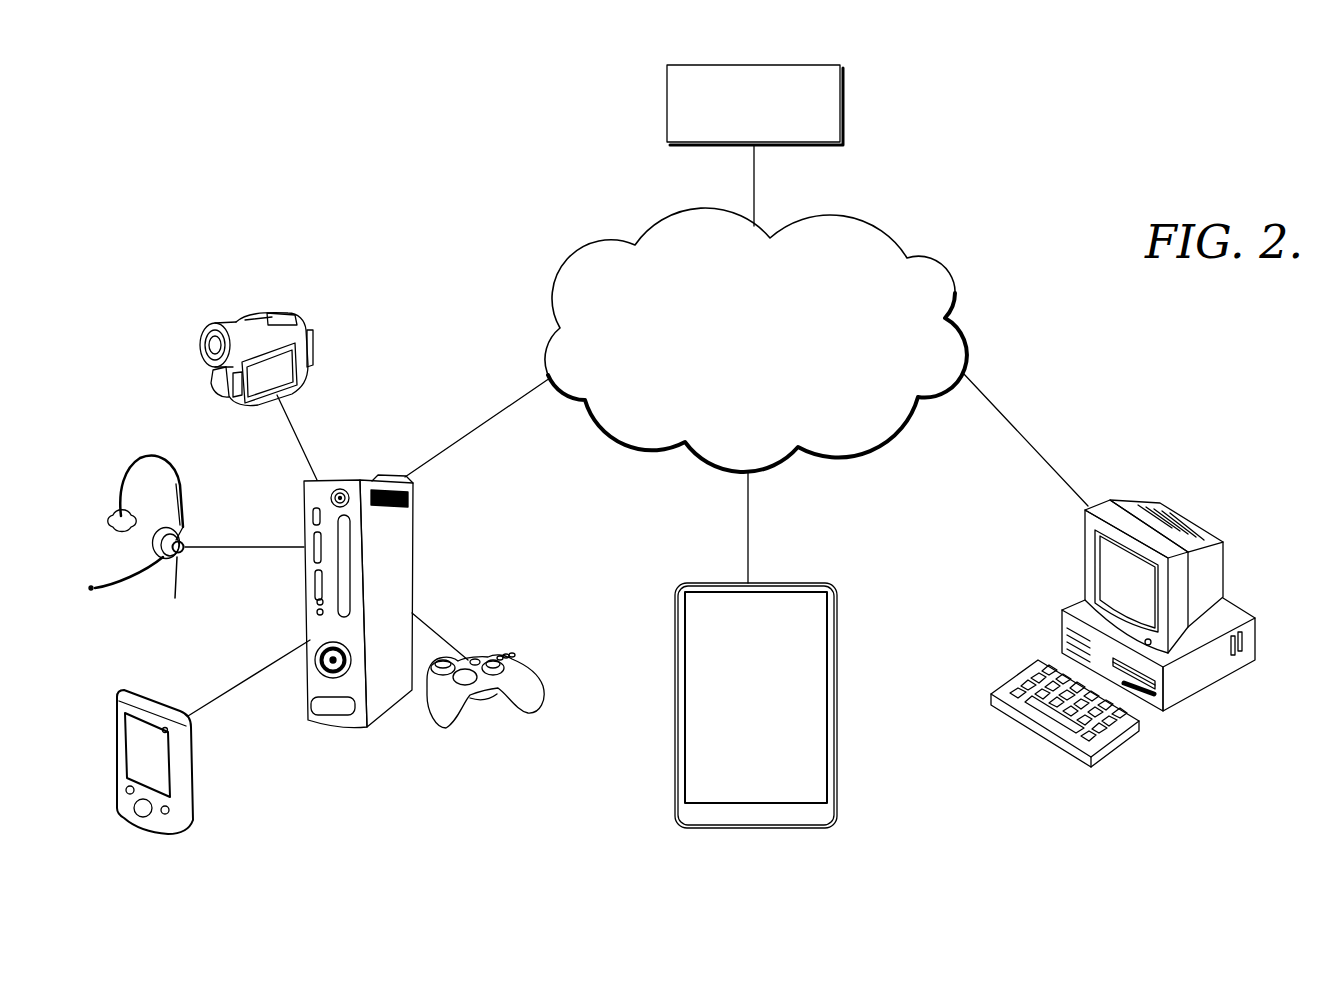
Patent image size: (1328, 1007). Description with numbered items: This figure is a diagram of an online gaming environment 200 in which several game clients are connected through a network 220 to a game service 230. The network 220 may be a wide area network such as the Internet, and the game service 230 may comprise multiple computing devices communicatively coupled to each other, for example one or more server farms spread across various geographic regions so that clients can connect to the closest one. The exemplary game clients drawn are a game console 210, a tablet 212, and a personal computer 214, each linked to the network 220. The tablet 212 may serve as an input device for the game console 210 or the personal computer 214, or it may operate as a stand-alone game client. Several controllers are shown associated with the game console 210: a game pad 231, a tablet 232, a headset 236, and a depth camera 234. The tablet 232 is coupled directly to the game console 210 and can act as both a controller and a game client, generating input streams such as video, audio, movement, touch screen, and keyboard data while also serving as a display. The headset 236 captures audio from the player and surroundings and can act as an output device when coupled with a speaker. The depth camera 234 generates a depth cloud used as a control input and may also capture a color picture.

The online gaming environment 200 is at (1033, 172).
The game console 210 is at (413, 530).
The tablet 212 is at (837, 684).
The personal computer 214 is at (1182, 513).
The network 220 is at (838, 215).
The game service 230 is at (800, 65).
The game pad 231 is at (487, 653).
The tablet 232 is at (195, 808).
The depth camera 234 is at (285, 311).
The headset 236 is at (167, 456).